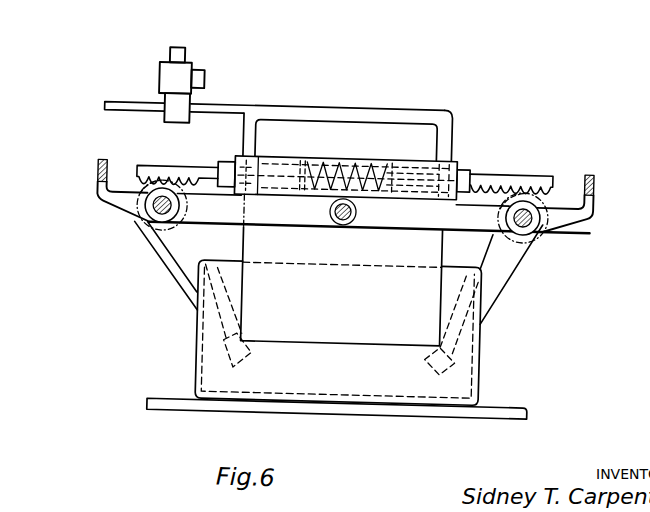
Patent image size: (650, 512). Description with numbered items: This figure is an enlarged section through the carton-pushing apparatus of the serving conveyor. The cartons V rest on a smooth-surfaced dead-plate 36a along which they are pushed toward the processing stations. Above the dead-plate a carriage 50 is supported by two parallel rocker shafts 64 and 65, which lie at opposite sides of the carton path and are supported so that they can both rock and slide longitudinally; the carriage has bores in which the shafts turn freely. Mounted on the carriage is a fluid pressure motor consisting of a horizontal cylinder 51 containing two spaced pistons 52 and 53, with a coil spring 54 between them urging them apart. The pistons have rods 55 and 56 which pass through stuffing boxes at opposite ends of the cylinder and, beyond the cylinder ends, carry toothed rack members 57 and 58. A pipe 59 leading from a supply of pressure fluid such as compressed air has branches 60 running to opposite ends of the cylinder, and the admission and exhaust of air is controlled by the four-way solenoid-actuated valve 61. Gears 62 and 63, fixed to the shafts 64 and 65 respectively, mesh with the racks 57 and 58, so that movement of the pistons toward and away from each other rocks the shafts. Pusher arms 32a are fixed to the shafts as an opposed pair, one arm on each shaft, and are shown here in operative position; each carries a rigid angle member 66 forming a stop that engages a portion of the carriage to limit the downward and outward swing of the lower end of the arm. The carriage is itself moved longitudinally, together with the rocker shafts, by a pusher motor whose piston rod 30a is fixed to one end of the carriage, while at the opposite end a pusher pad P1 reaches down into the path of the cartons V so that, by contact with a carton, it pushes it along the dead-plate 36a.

The piston rod 30a is at (343, 226).
The pusher arms 32a is at (191, 294).
The dead-plate 36a is at (168, 405).
The carriage 50 is at (427, 220).
The cylinder 51 is at (386, 169).
The piston 52 is at (305, 168).
The piston 53 is at (405, 171).
The coil spring 54 is at (340, 167).
The piston rod 55 is at (274, 172).
The piston rod 56 is at (442, 156).
The toothed rack member 57 is at (166, 180).
The toothed rack member 58 is at (515, 172).
The pipe 59 is at (229, 109).
The branches 60 is at (255, 122).
The four-way solenoid-actuated valve 61 is at (153, 79).
The gear 62 is at (138, 190).
The gear 63 is at (538, 193).
The rocker shaft 64 is at (147, 225).
The rocker shaft 65 is at (532, 220).
The rigid angle members 66 is at (95, 177).
The pusher pad P1 is at (335, 323).
The cartons V is at (476, 354).